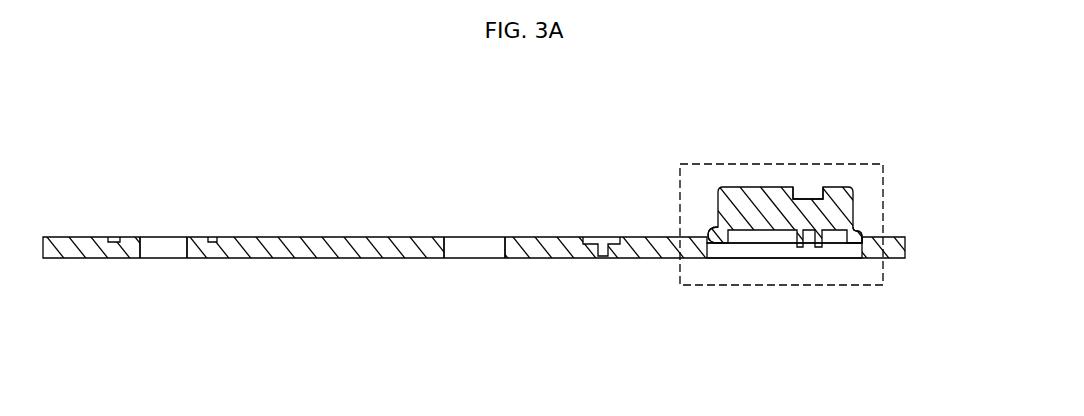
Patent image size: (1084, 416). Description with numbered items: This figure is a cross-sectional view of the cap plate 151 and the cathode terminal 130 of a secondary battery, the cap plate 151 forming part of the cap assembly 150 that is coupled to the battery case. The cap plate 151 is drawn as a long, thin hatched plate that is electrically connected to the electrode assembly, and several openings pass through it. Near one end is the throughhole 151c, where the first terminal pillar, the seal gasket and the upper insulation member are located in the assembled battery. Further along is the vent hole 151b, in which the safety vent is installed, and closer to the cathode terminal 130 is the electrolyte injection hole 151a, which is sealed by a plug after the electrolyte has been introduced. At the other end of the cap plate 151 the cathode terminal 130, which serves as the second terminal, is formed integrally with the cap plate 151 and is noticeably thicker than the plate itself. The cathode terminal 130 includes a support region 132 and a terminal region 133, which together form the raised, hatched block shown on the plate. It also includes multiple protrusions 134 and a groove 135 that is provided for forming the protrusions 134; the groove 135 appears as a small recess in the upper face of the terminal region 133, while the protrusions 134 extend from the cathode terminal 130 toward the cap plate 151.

The cathode terminal 130 is at (795, 173).
The support region 132 is at (712, 231).
The terminal region 133 is at (757, 187).
The protrusions 134 is at (838, 242).
The groove 135 is at (814, 156).
The cap assembly 150 is at (502, 253).
The cap plate 151 is at (370, 237).
The electrolyte injection hole 151a is at (600, 237).
The vent hole 151b is at (476, 250).
The throughhole 151c is at (160, 250).